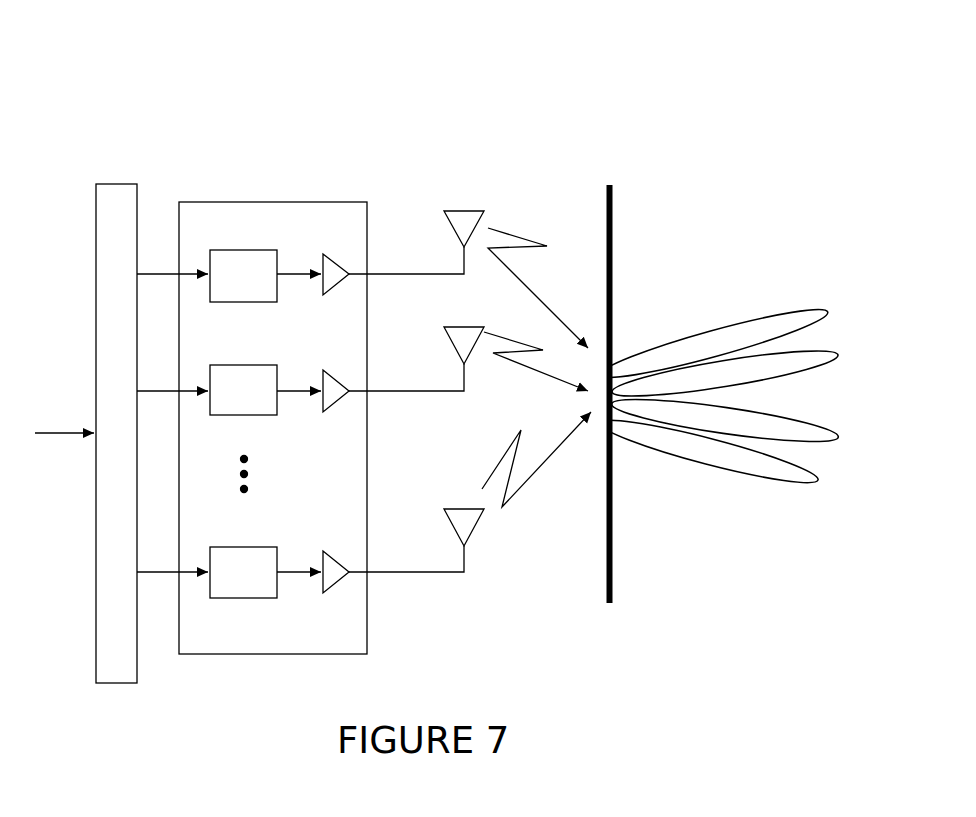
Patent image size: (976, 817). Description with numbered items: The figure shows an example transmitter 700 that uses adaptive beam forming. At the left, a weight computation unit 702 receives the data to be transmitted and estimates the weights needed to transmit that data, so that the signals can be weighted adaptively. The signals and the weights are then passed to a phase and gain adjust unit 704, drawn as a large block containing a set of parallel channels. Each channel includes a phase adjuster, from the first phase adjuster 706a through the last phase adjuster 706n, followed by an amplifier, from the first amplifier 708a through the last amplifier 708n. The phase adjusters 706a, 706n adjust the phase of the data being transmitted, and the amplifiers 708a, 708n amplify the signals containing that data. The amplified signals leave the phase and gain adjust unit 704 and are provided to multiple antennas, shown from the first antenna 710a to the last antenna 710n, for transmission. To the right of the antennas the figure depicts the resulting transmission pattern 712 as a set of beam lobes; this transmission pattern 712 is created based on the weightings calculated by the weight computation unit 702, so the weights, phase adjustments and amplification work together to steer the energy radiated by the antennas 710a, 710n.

The transmitter 700 is at (116, 44).
The weight computation unit 702 is at (116, 688).
The phase and gain adjust unit 704 is at (287, 659).
The phase adjuster 706a is at (236, 246).
The phase adjuster 706n is at (230, 544).
The amplifier 708a is at (322, 294).
The amplifier 708n is at (322, 592).
The antenna 710a is at (461, 207).
The antenna 710n is at (461, 505).
The transmission pattern 712 is at (734, 287).